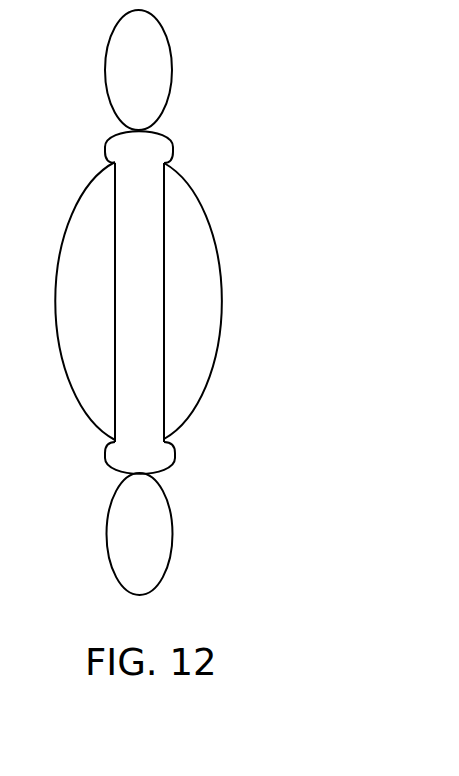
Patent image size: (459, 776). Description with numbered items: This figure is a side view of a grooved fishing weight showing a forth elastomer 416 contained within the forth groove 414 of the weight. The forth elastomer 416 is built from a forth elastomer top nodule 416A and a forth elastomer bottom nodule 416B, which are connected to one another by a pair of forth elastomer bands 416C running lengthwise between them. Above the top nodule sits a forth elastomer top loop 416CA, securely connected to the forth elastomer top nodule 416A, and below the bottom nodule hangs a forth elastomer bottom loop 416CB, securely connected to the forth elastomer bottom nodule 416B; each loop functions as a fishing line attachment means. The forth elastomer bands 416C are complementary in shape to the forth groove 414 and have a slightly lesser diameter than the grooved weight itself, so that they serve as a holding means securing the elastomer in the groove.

The forth groove 414 is at (165, 362).
The forth elastomer 416 is at (240, 302).
The forth elastomer top nodule 416A is at (173, 148).
The forth elastomer bottom nodule 416B is at (170, 460).
The forth elastomer bands 416C is at (142, 293).
The forth elastomer top loop 416CA is at (170, 68).
The forth elastomer bottom loop 416CB is at (172, 563).